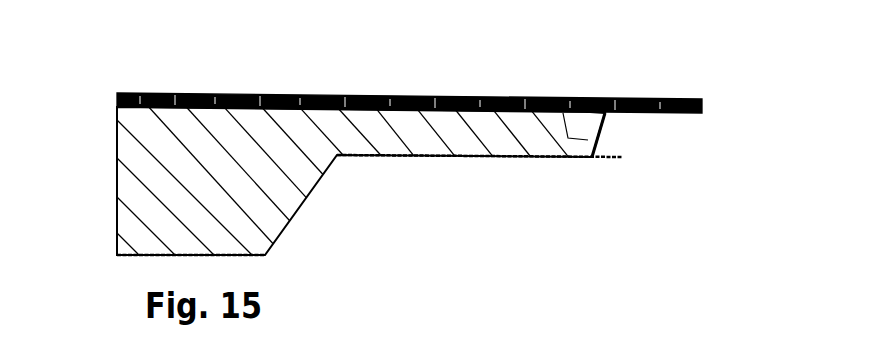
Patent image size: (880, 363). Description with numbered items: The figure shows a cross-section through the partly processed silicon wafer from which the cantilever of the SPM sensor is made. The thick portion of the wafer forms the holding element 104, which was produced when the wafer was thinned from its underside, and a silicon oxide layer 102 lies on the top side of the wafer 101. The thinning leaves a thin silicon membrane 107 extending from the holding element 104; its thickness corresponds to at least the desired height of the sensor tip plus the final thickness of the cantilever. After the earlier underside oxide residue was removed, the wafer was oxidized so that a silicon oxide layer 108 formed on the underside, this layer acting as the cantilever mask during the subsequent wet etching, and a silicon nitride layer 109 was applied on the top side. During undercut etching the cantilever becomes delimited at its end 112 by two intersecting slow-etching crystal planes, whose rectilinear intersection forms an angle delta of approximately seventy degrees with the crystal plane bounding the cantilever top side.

The substrate body 101 is at (133, 175).
The silicon oxide layer 102 is at (117, 105).
The holding element 104 is at (117, 228).
The silicon membrane 107 is at (488, 125).
The silicon oxide layer 108 is at (118, 255).
The silicon nitride layer 109 is at (127, 93).
The end of the cantilever 112 is at (606, 124).